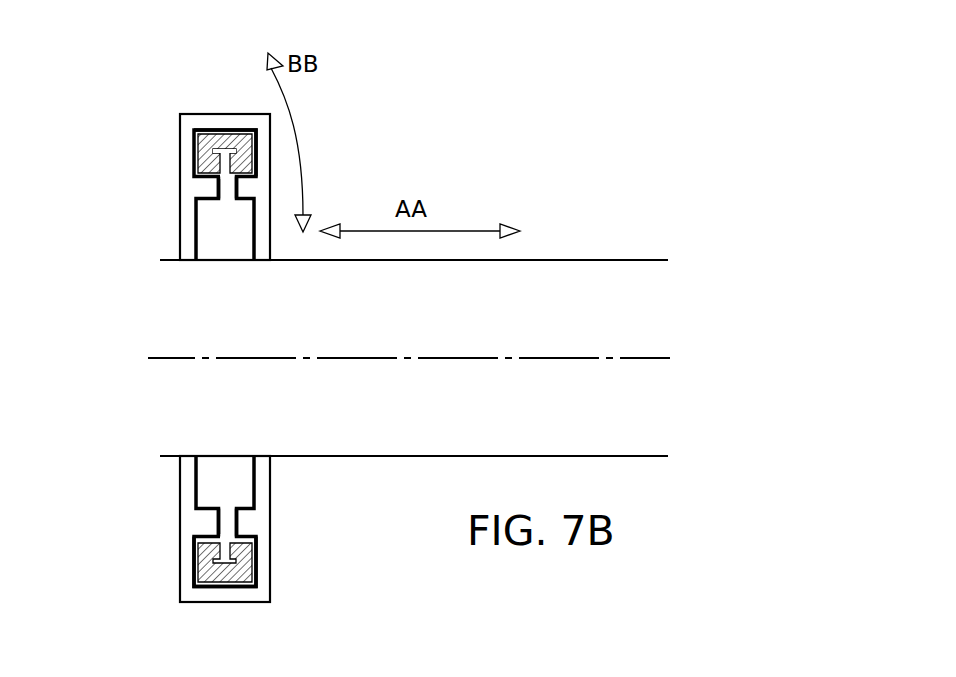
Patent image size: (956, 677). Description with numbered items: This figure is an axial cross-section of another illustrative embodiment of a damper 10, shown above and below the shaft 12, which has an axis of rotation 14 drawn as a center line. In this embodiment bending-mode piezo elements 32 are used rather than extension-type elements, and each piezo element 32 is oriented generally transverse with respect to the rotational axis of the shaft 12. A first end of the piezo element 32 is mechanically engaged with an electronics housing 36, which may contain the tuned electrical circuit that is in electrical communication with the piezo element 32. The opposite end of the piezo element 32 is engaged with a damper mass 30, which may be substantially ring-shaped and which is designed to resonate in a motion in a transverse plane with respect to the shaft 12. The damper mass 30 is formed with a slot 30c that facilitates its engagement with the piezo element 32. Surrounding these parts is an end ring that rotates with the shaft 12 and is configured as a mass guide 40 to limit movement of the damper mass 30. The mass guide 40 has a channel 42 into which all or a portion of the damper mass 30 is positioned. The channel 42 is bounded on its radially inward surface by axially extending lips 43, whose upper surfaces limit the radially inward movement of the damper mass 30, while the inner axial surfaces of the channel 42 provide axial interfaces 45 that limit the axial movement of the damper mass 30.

The damper 10 is at (447, 127).
The shaft 12 is at (450, 345).
The axis of rotation 14 is at (650, 358).
The damper mass 30 is at (238, 142).
The slot 30c is at (250, 172).
The piezo element 32 is at (218, 187).
The electronics housing 36 is at (240, 245).
The mass guide 40 is at (193, 114).
The channel 42 is at (218, 572).
The lip 43 is at (245, 530).
The axial interface 45 is at (257, 141).